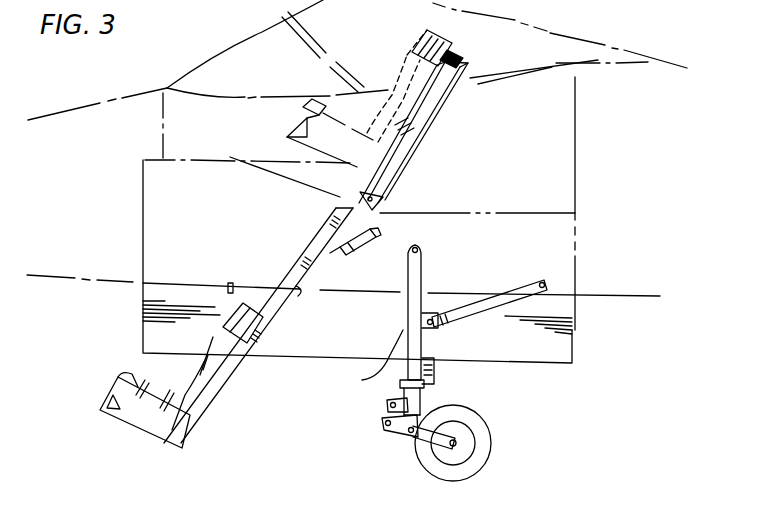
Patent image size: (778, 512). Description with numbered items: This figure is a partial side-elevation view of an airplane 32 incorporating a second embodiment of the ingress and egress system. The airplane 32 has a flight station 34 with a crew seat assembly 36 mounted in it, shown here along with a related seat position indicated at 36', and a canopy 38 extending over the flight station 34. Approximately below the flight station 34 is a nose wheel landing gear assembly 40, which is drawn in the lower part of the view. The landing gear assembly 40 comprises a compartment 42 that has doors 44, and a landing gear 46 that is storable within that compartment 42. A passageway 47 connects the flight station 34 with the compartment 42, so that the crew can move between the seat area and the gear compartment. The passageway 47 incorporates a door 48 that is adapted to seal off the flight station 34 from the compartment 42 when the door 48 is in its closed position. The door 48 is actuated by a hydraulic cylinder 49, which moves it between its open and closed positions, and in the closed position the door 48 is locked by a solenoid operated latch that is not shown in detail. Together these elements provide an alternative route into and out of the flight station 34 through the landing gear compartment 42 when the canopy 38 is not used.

The airplane 32 is at (618, 166).
The flight station 34 is at (208, 122).
The crew seat assembly 36 is at (431, 105).
The strut foot 36' is at (145, 431).
The canopy 38 is at (592, 38).
The nose wheel landing gear assembly 40 is at (488, 445).
The compartment 42 is at (523, 260).
The doors 44 is at (573, 365).
The landing gear 46 is at (386, 347).
The passageway 47 is at (228, 160).
The door 48 is at (325, 272).
The hydraulic cylinder 49 is at (365, 238).